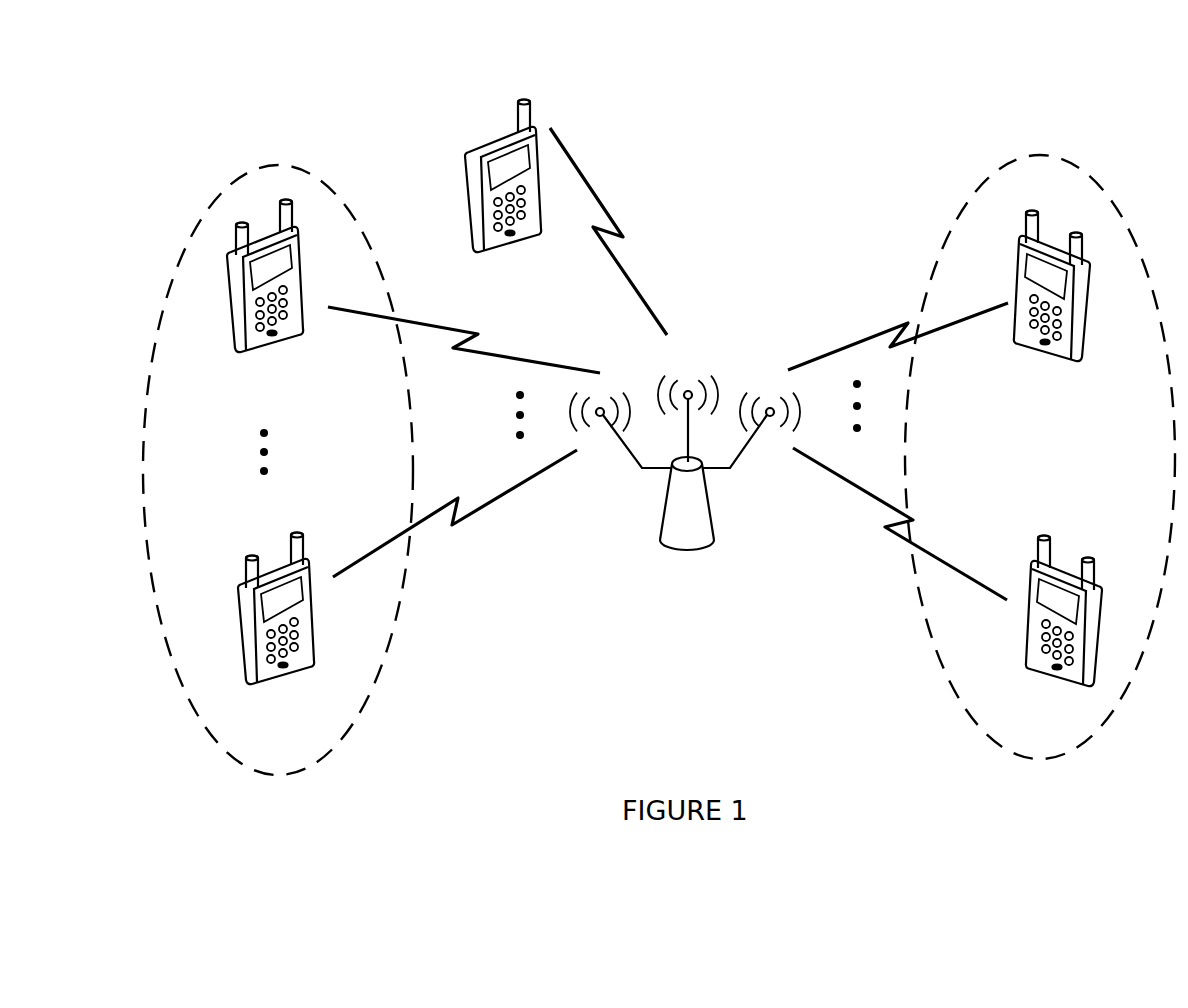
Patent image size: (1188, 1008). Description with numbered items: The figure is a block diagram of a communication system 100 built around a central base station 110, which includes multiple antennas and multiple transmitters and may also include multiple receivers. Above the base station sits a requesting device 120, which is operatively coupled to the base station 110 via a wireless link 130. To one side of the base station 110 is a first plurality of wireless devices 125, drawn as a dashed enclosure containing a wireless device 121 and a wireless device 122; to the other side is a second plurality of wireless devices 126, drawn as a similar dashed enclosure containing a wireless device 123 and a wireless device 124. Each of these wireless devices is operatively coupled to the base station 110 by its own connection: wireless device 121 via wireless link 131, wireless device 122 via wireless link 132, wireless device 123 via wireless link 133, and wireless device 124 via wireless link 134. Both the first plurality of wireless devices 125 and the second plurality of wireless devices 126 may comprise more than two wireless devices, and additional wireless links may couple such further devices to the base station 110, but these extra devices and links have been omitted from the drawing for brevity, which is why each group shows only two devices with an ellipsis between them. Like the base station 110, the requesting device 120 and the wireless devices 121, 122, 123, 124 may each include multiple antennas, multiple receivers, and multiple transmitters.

The communication system 100 is at (858, 82).
The base station 110 is at (680, 553).
The requesting device 120 is at (477, 247).
The wireless device 121 is at (243, 350).
The wireless device 122 is at (262, 683).
The wireless device 123 is at (1074, 360).
The wireless device 124 is at (1052, 673).
The first plurality of wireless devices 125 is at (247, 768).
The second plurality of wireless devices 126 is at (1010, 755).
The wireless link 130 is at (632, 273).
The wireless link 131 is at (512, 358).
The wireless link 132 is at (506, 487).
The wireless link 133 is at (852, 348).
The wireless link 134 is at (882, 510).